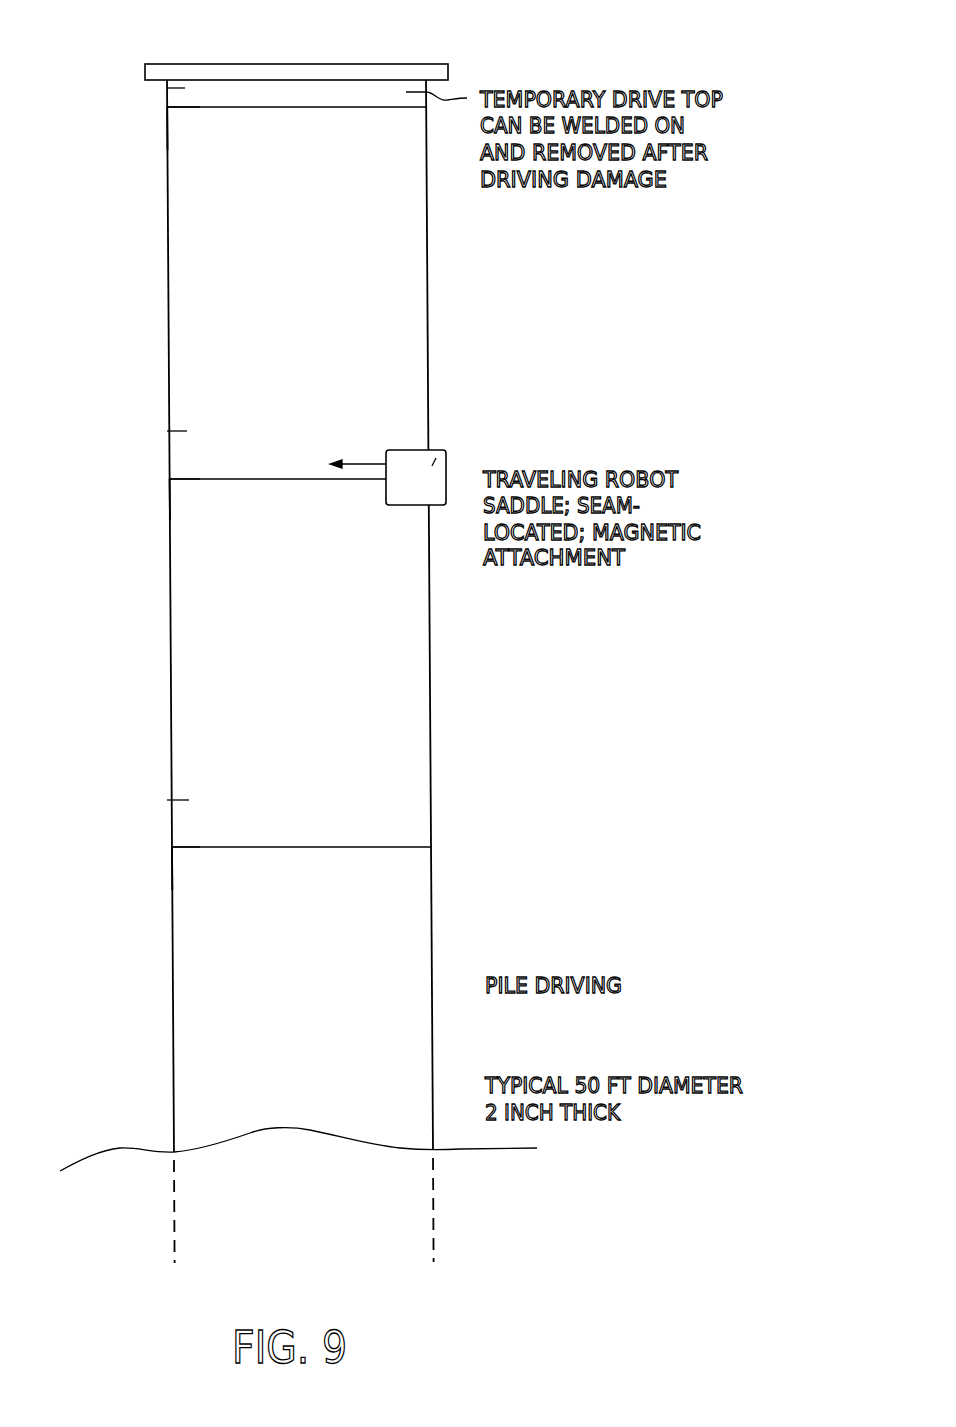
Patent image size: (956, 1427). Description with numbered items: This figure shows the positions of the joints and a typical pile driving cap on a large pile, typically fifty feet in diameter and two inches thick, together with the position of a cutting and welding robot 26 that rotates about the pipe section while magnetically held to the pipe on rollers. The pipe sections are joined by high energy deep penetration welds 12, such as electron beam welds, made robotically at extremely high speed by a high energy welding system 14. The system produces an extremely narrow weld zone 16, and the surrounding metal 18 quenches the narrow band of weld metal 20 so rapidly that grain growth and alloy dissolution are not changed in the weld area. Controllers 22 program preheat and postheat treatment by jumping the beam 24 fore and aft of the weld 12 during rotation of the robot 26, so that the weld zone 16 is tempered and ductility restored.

The high energy deep penetration weld 12 is at (160, 107).
The high energy welding system 14 is at (436, 458).
The weld zone 16 is at (203, 108).
The surrounding metal 18 is at (162, 88).
The weld metal 20 is at (287, 108).
The controllers 22 is at (432, 480).
The beam 24 is at (167, 107).
The robot 26 is at (440, 435).